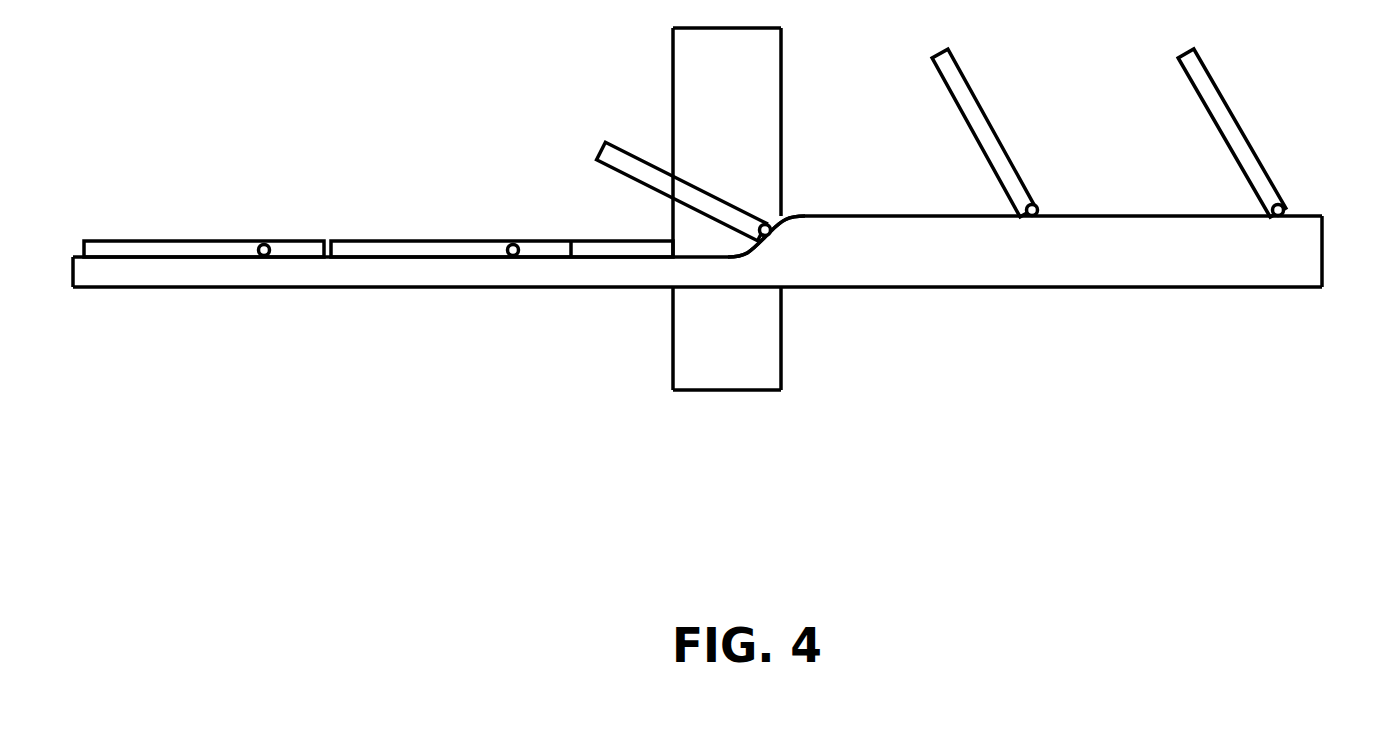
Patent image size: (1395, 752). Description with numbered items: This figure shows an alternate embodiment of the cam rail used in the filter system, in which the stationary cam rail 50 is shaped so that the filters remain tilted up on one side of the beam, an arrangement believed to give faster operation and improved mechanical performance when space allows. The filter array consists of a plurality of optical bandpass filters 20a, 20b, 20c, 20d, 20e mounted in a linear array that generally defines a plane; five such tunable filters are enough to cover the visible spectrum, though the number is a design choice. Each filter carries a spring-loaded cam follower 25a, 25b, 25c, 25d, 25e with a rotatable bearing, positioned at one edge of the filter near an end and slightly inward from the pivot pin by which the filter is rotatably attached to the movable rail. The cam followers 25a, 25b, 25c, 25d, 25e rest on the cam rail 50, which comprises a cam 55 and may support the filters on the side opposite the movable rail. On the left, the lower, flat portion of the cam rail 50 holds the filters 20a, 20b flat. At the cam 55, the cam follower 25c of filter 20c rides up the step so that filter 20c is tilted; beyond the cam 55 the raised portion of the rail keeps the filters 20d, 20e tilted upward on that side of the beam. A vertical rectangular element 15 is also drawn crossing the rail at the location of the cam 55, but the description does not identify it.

The post 15 is at (768, 42).
The cam rail 50 is at (1058, 267).
The cam 55 is at (772, 245).
The optical bandpass filter 20a is at (148, 229).
The optical bandpass filter 20b is at (399, 231).
The optical bandpass filter 20c is at (696, 175).
The optical bandpass filter 20d is at (1013, 136).
The optical bandpass filter 20e is at (1257, 126).
The cam follower 25a is at (270, 253).
The cam follower 25b is at (518, 256).
The cam follower 25c is at (781, 215).
The cam follower 25d is at (1047, 200).
The cam follower 25e is at (1296, 204).